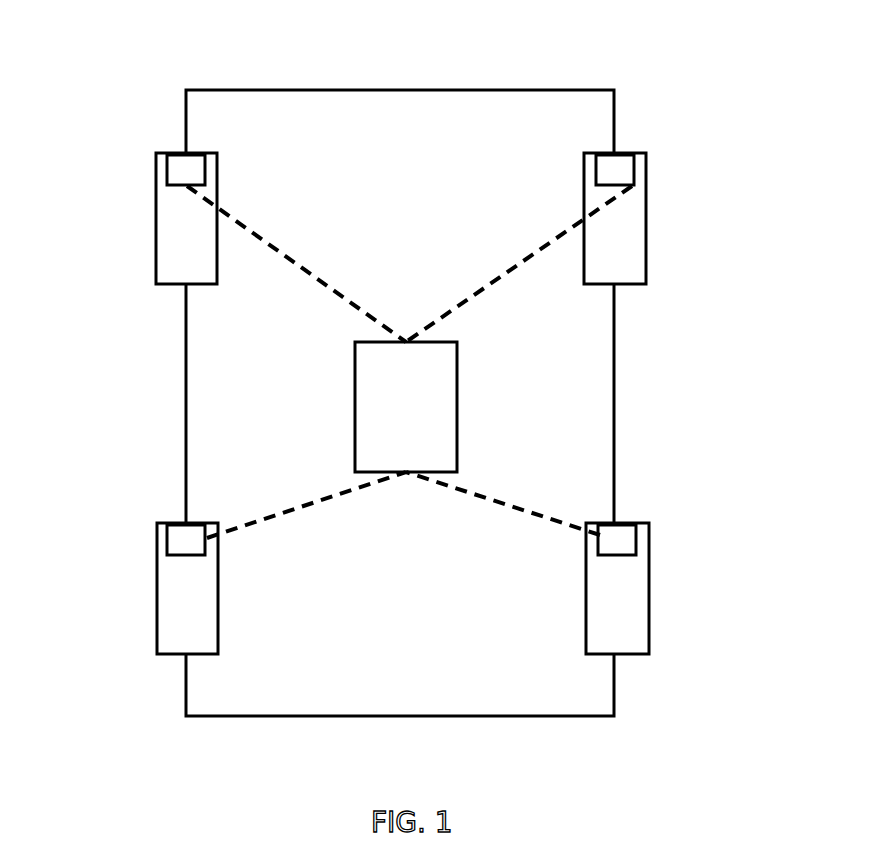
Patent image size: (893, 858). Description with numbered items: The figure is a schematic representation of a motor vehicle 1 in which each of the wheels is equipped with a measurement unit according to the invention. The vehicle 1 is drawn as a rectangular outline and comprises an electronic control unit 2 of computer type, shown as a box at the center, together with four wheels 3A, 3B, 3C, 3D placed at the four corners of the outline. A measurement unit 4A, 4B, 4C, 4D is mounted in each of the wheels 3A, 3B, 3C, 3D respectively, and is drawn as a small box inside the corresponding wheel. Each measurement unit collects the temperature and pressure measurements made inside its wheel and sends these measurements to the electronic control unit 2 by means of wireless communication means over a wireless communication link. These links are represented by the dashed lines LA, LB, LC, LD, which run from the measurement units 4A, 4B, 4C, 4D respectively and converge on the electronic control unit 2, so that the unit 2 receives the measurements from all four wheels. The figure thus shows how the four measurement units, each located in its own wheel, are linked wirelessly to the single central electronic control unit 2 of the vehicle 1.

The vehicle 1 is at (416, 86).
The electronic control unit 2 is at (355, 392).
The wheel 3A is at (156, 258).
The wheel 3B is at (646, 258).
The wheel 3C is at (157, 630).
The wheel 3D is at (649, 622).
The measurement unit 4A is at (168, 168).
The measurement unit 4B is at (646, 170).
The measurement unit 4C is at (167, 537).
The measurement unit 4D is at (649, 545).
The wireless communication link LA is at (296, 264).
The wireless communication link LB is at (519, 264).
The wireless communication link LC is at (306, 508).
The wireless communication link LD is at (503, 508).